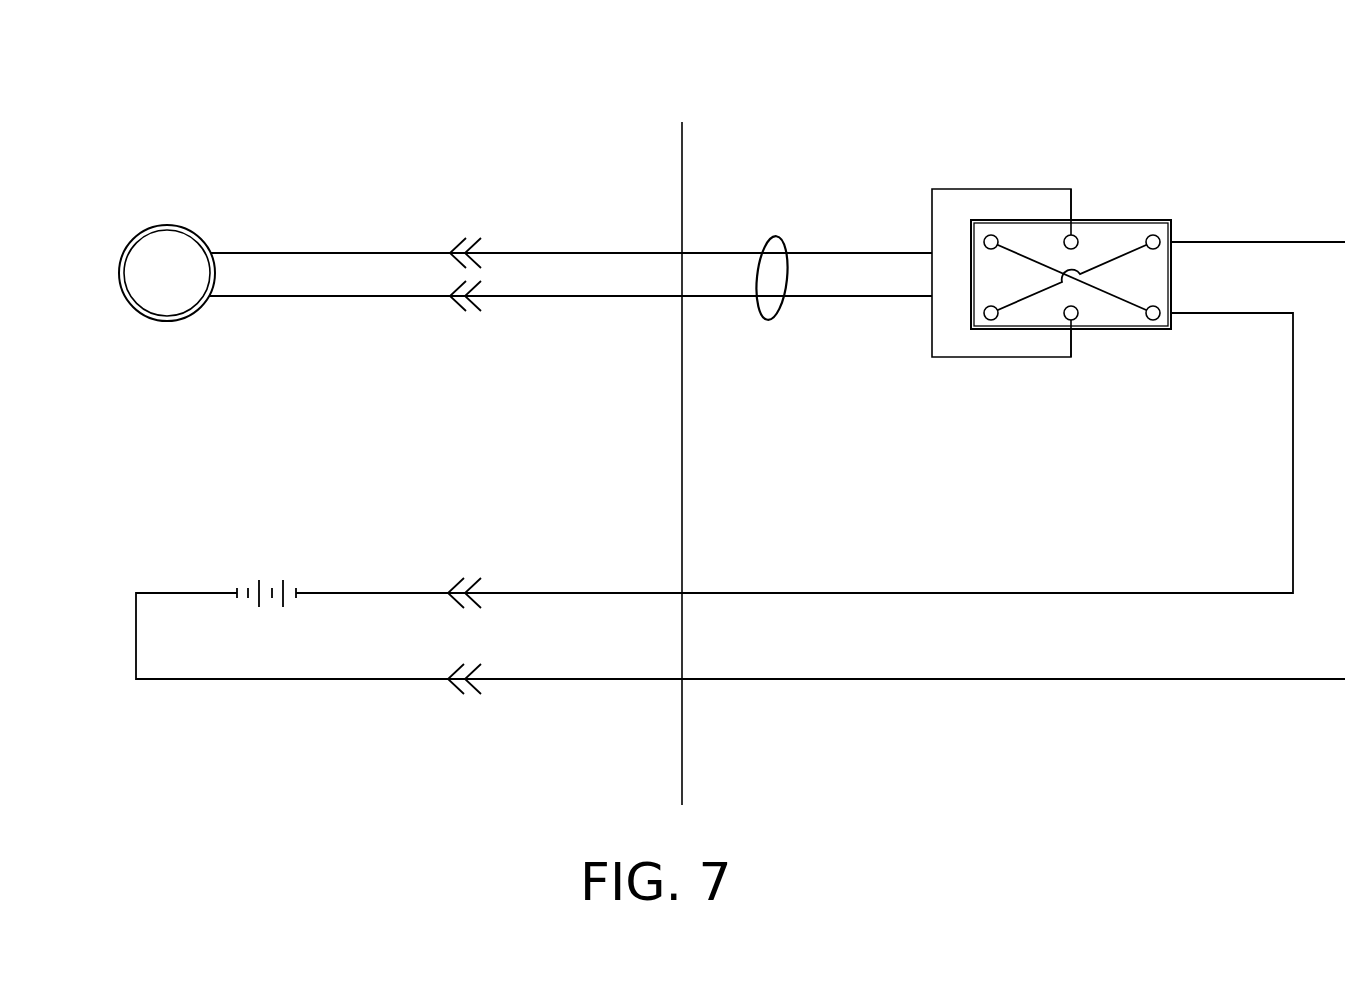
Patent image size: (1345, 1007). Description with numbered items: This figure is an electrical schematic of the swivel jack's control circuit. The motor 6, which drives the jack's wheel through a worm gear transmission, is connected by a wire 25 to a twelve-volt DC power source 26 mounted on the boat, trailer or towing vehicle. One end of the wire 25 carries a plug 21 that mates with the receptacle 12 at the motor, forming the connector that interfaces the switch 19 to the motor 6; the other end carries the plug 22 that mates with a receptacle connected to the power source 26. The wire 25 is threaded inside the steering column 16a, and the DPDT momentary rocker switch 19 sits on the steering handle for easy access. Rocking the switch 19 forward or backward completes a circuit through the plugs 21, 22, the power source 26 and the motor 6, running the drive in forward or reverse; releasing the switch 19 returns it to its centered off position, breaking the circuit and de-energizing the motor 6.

The motor 6 is at (187, 320).
The receptacle 12 is at (453, 240).
The plug 21 is at (492, 238).
The wire 25 is at (783, 225).
The switch 19 is at (1105, 216).
The power source 26 is at (258, 578).
The plug 22 is at (485, 708).
The steering column 16a is at (996, 474).